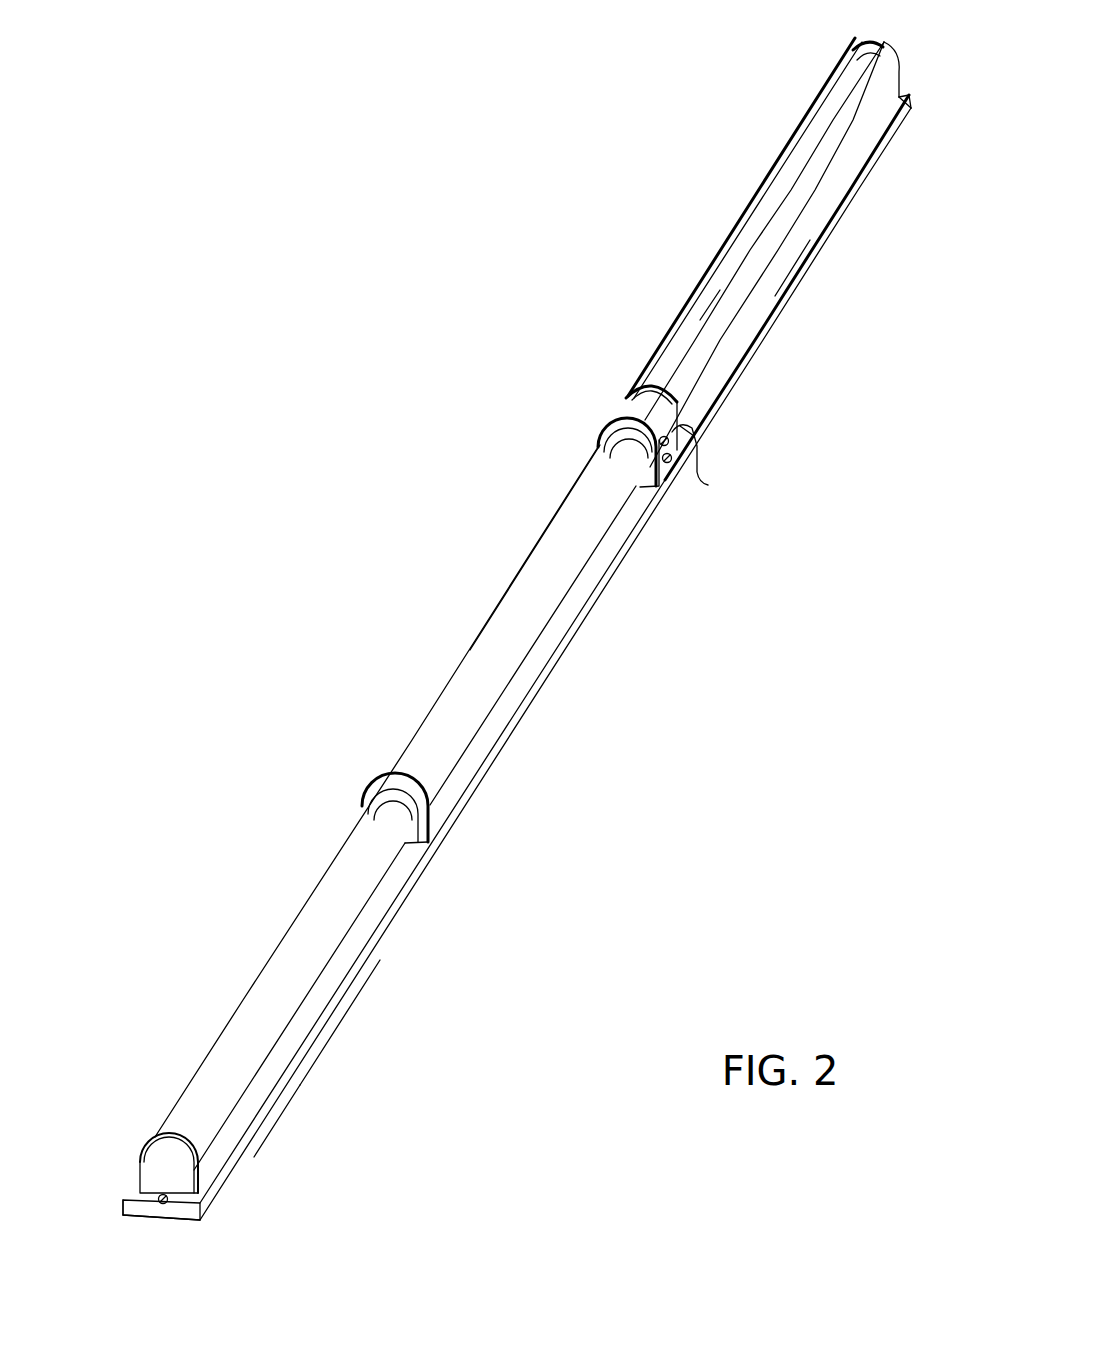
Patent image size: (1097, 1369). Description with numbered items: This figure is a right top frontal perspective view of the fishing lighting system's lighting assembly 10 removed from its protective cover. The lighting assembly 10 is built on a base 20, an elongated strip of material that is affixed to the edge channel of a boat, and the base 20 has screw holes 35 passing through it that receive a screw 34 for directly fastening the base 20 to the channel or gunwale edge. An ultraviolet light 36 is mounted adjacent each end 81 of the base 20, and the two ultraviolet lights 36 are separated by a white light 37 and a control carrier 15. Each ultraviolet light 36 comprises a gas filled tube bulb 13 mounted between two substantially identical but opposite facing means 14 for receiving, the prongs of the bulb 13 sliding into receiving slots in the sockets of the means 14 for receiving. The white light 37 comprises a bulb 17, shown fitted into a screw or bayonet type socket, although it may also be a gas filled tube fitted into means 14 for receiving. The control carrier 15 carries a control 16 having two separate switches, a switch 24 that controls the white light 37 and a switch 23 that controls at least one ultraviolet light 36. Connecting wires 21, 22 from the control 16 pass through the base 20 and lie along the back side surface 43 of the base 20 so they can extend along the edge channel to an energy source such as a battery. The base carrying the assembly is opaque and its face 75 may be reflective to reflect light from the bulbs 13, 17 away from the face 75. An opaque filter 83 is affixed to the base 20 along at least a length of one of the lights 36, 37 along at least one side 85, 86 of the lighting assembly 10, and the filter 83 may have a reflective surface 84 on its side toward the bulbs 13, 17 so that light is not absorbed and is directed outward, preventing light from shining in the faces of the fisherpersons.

The lighting assembly 10 is at (844, 419).
The bulb 13 is at (820, 130).
The means for receiving 14 is at (862, 40).
The control carrier 15 is at (632, 407).
The control 16 is at (542, 433).
The bulb 17 is at (532, 595).
The base 20 is at (240, 1130).
The connecting wire 21 is at (703, 478).
The connecting wire 22 is at (698, 482).
The switch 23 is at (668, 463).
The switch 24 is at (662, 436).
The screw 34 is at (150, 1195).
The screw hole 35 is at (150, 1205).
The ultraviolet light 36 is at (674, 159).
The white light 37 is at (351, 460).
The back side surface 43 is at (360, 990).
The face 75 is at (290, 1040).
The end 81 is at (912, 95).
The opaque filter 83 is at (790, 250).
The reflective surface 84 is at (708, 312).
The side 85 is at (859, 228).
The side 86 is at (603, 254).